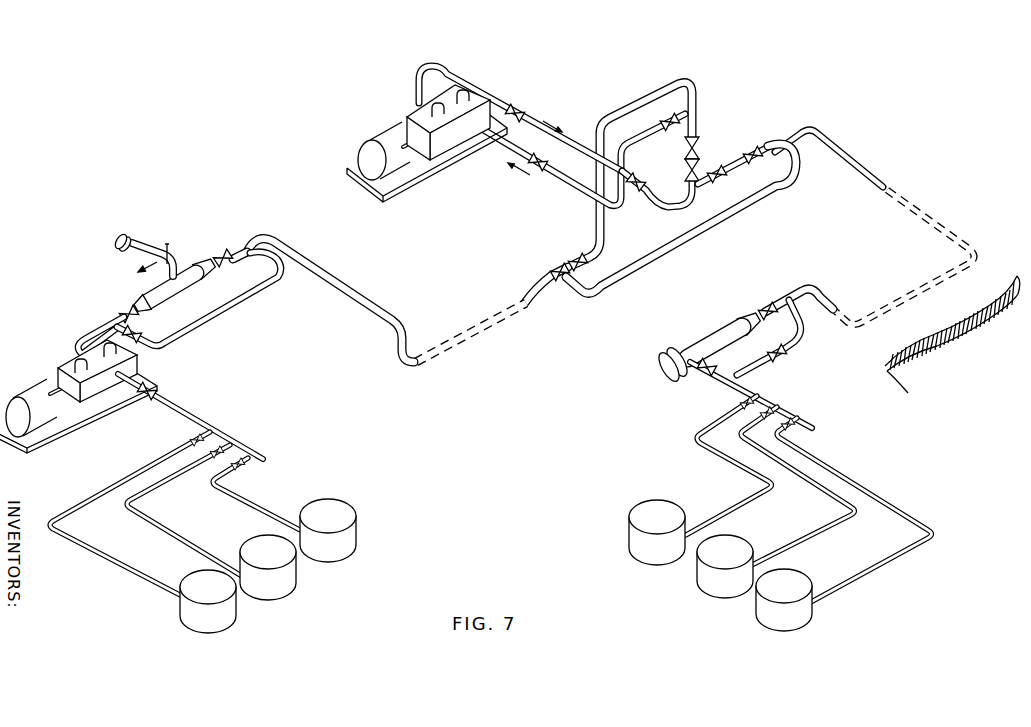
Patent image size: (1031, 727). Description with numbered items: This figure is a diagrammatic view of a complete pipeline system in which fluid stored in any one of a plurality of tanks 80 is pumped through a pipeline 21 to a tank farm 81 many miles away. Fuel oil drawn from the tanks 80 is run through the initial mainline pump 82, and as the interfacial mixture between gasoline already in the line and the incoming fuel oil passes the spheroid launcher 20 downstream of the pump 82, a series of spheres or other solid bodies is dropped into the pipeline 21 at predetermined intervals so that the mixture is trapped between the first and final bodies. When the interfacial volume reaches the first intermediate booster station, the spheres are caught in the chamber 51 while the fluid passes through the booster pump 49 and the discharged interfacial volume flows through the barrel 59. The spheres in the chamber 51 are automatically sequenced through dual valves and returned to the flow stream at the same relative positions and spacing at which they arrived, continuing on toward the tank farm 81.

The spheroid launcher 20 is at (132, 239).
The pipeline 21 is at (352, 290).
The booster pump 49 is at (410, 115).
The chamber 51 is at (699, 104).
The barrel 59 is at (707, 194).
The tanks 80 is at (348, 507).
The tank farm 81 is at (628, 528).
The initial mainline pump 82 is at (57, 371).